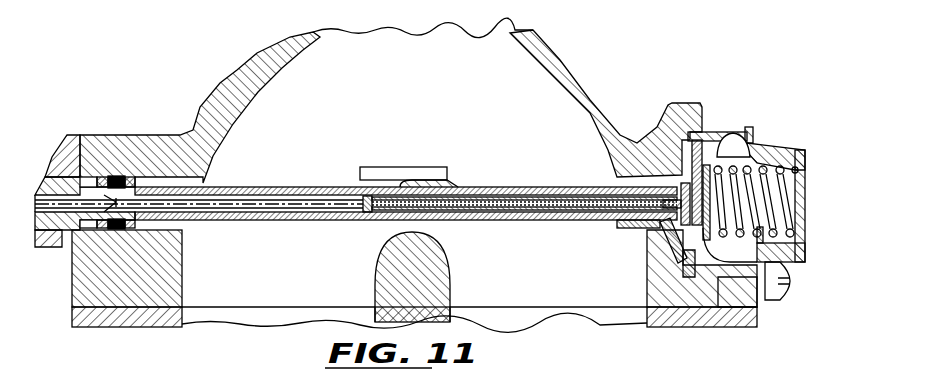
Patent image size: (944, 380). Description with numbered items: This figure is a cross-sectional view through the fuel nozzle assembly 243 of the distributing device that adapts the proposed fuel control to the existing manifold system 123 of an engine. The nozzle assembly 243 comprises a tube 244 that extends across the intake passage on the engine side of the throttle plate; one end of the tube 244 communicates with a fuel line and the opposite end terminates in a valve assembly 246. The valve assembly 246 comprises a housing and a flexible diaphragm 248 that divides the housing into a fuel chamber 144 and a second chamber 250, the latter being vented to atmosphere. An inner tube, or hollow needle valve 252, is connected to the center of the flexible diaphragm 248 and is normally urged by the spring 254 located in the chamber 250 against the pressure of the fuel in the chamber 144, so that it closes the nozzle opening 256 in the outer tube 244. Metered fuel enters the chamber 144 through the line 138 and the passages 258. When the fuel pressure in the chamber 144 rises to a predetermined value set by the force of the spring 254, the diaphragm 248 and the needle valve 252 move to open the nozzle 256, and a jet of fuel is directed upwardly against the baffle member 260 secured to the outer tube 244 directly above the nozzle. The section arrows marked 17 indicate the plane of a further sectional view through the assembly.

The manifold system 123 is at (170, 321).
The tube 244 is at (247, 187).
The fuel nozzle assembly 243 is at (352, 175).
The baffle member 260 is at (387, 172).
The nozzle opening 256 is at (433, 181).
The line 138 is at (367, 220).
The section line 17 is at (491, 92).
The hollow needle valve 252 is at (672, 228).
The passages 258 is at (700, 247).
The chamber 144 is at (732, 254).
The flexible diaphragm 248 is at (722, 275).
The chamber 250 is at (764, 288).
The spring 254 is at (719, 167).
The valve assembly 246 is at (778, 140).